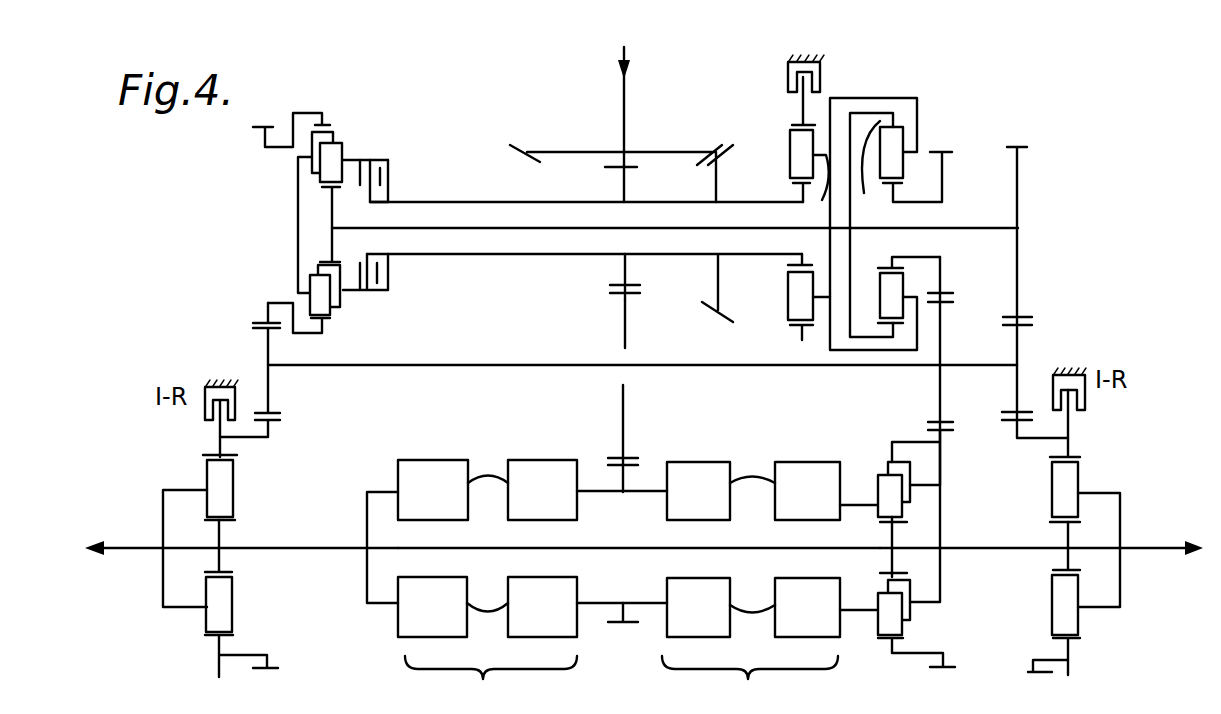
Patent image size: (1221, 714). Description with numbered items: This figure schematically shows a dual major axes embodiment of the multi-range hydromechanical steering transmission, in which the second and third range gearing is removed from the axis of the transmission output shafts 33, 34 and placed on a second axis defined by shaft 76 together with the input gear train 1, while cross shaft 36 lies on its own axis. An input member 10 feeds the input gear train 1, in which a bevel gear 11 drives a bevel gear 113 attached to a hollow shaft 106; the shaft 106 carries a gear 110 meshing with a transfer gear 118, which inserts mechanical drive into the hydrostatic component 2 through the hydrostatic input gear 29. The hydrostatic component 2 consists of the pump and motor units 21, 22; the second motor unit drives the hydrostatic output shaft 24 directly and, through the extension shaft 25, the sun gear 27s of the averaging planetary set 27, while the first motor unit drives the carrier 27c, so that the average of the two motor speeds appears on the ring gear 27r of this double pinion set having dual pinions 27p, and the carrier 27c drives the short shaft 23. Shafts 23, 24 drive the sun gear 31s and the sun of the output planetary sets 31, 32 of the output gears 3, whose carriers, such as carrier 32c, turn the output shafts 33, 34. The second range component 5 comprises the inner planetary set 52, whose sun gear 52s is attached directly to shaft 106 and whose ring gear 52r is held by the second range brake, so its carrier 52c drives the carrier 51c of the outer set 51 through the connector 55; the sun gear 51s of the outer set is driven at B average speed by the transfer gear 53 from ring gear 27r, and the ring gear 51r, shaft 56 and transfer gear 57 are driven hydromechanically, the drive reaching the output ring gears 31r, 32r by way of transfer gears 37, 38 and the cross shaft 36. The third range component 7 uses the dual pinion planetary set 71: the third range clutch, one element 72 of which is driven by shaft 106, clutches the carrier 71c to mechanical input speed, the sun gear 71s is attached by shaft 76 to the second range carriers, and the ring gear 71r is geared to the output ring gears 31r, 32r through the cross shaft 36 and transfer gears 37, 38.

The input gear train 1 is at (600, 124).
The hydrostatic reverse and first range and steer component 2 is at (623, 642).
The output gears 3 is at (148, 611).
The second range component 5 is at (930, 84).
The third range component 7 is at (412, 136).
The input shaft 10 is at (627, 98).
The bevel gear 11 is at (652, 152).
The hydrostatic pump and motor unit 21 is at (770, 588).
The hydrostatic pump and motor unit 22 is at (517, 587).
The hydrostatic output shaft 23 is at (1019, 544).
The hydrostatic output shaft 24 is at (311, 544).
The extension shaft 25 is at (639, 550).
The planetary gear set 27 is at (923, 659).
The carrier 27c is at (936, 482).
The dual pinions 27p is at (910, 629).
The ring gear 27r is at (886, 457).
The sun gear 27s is at (891, 539).
The hydrostatic input gear 29 is at (600, 494).
The output planetary set 31 is at (1088, 639).
The ring gear 31r is at (1074, 452).
The sun gear 31s is at (1064, 560).
The output planetary set 32 is at (196, 641).
The carrier 32c is at (196, 486).
The ring gear 32r is at (226, 450).
The transmission output shaft 33 is at (1168, 552).
The transmission output shaft 34 is at (137, 553).
The cross shaft 36 is at (651, 366).
The transfer gear 37 is at (1017, 396).
The transfer gear 38 is at (270, 399).
The second range outer planetary set 51 is at (875, 92).
The carrier 51c is at (919, 124).
The ring gear 51r is at (877, 225).
The sun gear 51s is at (893, 268).
The second range inner planetary set 52 is at (774, 307).
The carrier 52c is at (804, 193).
The ring gear 52r is at (802, 120).
The sun gear 52s is at (800, 187).
The B average transfer gear 53 is at (945, 332).
The connector 55 is at (903, 98).
The shaft 56 is at (998, 228).
The transfer gear 57 is at (1022, 226).
The third range planetary set 71 is at (318, 106).
The carrier 71c is at (299, 241).
The ring gear 71r is at (325, 325).
The sun gear 71s is at (337, 214).
The third range clutch structure element 72 is at (392, 189).
The shaft 76 is at (560, 228).
The hollow shaft 106 is at (477, 201).
The gear 110 is at (628, 278).
The bevel gear 113 is at (721, 285).
The transfer gear 118 is at (627, 322).